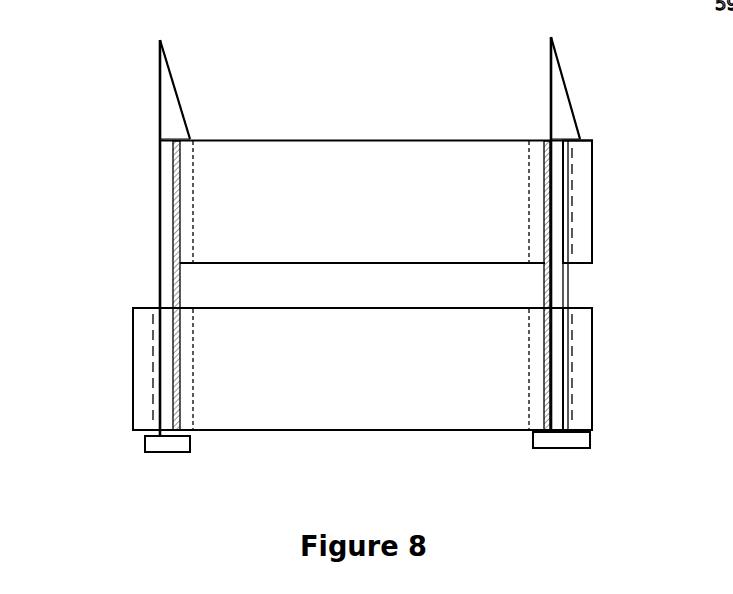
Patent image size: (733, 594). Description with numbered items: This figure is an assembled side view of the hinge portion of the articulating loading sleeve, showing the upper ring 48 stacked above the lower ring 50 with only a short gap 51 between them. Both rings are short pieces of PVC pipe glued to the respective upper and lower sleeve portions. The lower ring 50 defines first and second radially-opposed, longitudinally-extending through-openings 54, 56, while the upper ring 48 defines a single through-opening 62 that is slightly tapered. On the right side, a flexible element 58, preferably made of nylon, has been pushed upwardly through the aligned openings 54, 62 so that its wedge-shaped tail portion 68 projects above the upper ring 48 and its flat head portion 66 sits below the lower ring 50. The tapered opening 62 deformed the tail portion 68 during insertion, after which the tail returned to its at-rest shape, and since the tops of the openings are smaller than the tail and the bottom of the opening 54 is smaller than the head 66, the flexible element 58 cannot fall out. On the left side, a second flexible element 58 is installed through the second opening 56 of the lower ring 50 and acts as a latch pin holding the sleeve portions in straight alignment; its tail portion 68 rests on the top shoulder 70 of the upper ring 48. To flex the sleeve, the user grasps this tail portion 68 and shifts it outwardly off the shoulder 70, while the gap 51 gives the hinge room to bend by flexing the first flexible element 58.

The upper ring 48 is at (145, 207).
The lower ring 50 is at (115, 345).
The gap 51 is at (600, 263).
The first through-opening 54 is at (600, 415).
The second through-opening 56 is at (130, 425).
The flexible element 58 is at (130, 85).
The through-opening 62 is at (585, 228).
The flat head portion 66 is at (592, 440).
The wedge-shaped tail portion 68 is at (185, 111).
The top shoulder 70 is at (300, 139).